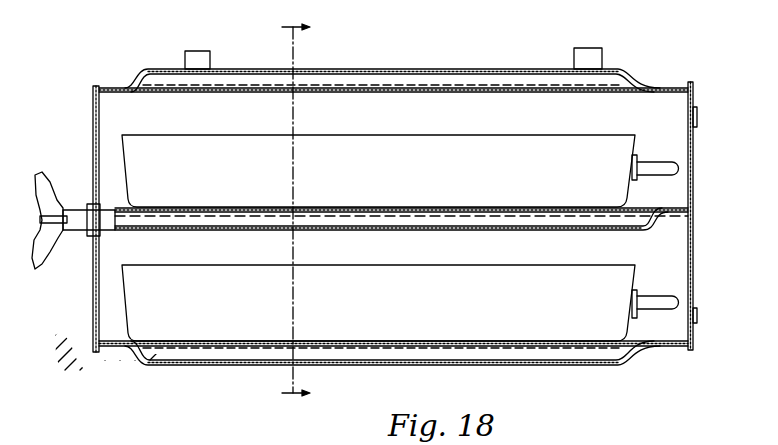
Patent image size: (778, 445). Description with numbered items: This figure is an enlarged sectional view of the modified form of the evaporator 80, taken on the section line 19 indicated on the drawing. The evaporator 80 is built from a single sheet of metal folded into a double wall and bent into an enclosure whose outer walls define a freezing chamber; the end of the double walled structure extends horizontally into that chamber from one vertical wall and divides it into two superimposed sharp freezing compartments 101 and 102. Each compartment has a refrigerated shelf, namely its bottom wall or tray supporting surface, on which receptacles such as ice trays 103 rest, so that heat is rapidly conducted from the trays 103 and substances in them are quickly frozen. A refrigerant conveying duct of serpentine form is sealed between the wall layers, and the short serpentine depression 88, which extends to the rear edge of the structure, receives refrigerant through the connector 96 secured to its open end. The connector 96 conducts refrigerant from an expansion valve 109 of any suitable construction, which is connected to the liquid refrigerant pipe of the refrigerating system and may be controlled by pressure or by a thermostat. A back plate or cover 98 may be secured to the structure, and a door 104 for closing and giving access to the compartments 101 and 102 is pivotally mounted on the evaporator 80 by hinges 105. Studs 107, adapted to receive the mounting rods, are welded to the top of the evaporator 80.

The evaporator 80 is at (158, 80).
The serpentine depression 88 is at (197, 220).
The connector 96 is at (90, 236).
The back plate or cover 98 is at (93, 318).
The sharp freezing compartment 101 is at (465, 102).
The sharp freezing compartment 102 is at (648, 248).
The ice trays 103 is at (366, 145).
The door 104 is at (693, 175).
The hinges 105 is at (697, 116).
The studs 107 is at (200, 58).
The expansion valve 109 is at (48, 172).
The section line 19- 19 is at (308, 212).